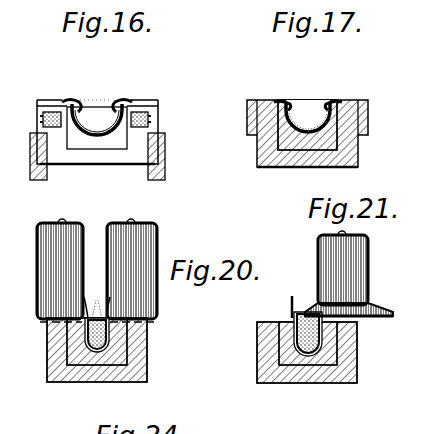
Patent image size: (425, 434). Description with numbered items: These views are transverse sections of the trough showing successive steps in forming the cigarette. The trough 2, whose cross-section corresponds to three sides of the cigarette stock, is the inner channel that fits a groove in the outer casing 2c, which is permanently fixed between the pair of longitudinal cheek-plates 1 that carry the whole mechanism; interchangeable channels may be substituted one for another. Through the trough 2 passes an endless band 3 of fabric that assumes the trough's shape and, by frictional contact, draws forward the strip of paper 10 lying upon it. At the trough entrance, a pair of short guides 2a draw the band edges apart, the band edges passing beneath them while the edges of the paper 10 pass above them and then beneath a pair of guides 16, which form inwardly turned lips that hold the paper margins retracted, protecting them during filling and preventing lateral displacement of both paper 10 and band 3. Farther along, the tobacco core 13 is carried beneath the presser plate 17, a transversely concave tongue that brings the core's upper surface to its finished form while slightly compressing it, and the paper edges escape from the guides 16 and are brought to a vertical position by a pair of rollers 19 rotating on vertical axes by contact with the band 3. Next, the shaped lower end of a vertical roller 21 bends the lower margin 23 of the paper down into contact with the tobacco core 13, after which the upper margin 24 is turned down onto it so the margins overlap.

In FIG. 16, the cheek-plate 1 is at (40, 175).
In FIG. 16, the trough 2 is at (87, 150).
In FIG. 17, the trough 2 is at (276, 168).
In FIG. 20, the trough 2 is at (103, 372).
In FIG. 21, the trough 2 is at (312, 372).
In FIG. 16, the short guide 2a is at (150, 78).
In FIG. 16, the outer casing 2c is at (110, 163).
In FIG. 17, the outer casing 2c is at (303, 162).
In FIG. 16, the endless band 3 is at (115, 133).
In FIG. 17, the endless band 3 is at (325, 128).
In FIG. 20, the endless band 3 is at (58, 352).
In FIG. 21, the endless band 3 is at (275, 353).
In FIG. 20, the strip of paper 10 is at (84, 373).
In FIG. 21, the strip of paper 10 is at (300, 372).
In FIG. 20, the tobacco core 13 is at (108, 338).
In FIG. 21, the tobacco core 13 is at (318, 350).
In FIG. 16, the guide 16 is at (114, 102).
In FIG. 17, the guide 16 is at (322, 104).
In FIG. 20, the presser plate 17 is at (93, 300).
In FIG. 20, the roller 19 is at (46, 268).
In FIG. 21, the vertical roller 21 is at (357, 266).
In FIG. 21, the lower margin 23 is at (312, 312).
In FIG. 21, the upper margin 24 is at (291, 308).